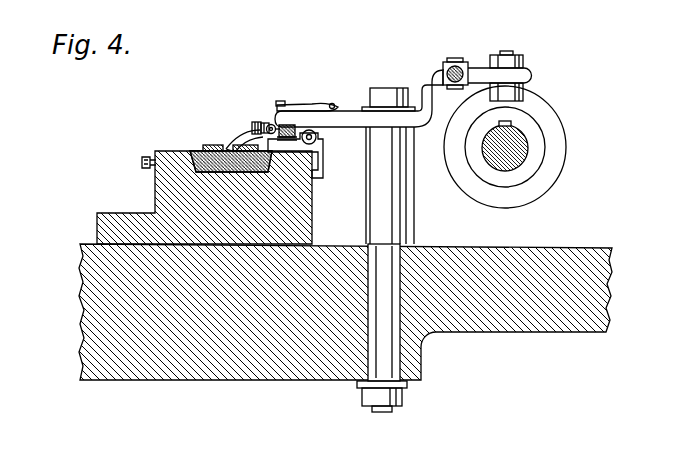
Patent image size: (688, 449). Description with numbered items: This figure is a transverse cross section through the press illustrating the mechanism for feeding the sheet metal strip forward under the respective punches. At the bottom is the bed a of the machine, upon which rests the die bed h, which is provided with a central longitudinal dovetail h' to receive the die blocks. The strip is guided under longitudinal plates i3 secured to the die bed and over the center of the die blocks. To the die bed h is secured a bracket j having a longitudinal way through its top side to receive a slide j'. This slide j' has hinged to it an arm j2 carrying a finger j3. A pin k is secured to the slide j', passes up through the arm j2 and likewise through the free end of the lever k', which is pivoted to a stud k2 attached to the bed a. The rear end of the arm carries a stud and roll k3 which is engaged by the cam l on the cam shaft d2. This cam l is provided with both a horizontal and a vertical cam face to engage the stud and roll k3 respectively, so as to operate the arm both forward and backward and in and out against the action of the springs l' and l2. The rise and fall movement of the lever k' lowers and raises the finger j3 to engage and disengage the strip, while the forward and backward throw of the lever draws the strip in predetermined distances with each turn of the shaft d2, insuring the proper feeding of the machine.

The bed a is at (568, 263).
The die bed h is at (204, 197).
The central longitudinal dovetail h' is at (216, 145).
The longitudinal plates i3 is at (212, 145).
The bracket j is at (304, 151).
The slide j' is at (323, 134).
The arm j2 is at (272, 123).
The finger j3 is at (243, 138).
The pin k is at (307, 91).
The lever k' is at (359, 98).
The stud k2 is at (378, 172).
The stud and roll k3 is at (523, 93).
The cam l is at (495, 147).
The spring l' is at (487, 58).
The spring l2 is at (278, 101).
The cam shaft d2 is at (530, 137).